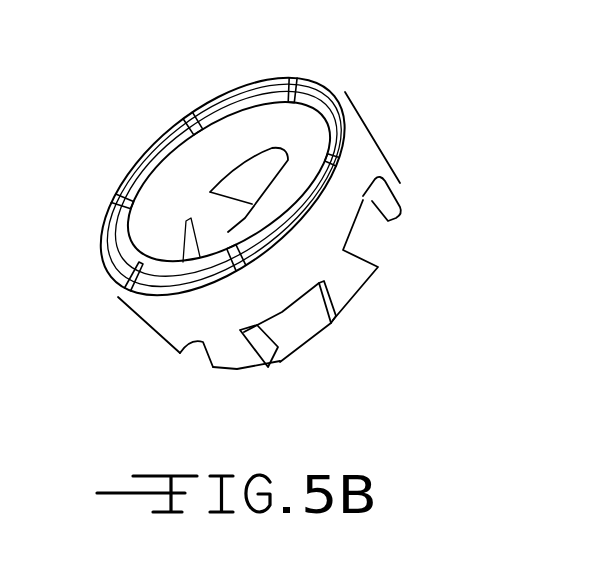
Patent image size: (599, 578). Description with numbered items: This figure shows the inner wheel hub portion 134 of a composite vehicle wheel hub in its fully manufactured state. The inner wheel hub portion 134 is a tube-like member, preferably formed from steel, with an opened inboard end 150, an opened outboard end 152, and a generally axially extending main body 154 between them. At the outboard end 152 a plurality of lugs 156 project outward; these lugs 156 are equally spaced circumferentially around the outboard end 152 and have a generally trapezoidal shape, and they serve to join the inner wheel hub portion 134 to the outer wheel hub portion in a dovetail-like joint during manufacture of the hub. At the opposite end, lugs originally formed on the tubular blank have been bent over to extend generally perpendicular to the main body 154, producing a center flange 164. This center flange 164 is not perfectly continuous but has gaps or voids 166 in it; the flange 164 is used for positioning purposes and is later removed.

The inner wheel hub portion 134 is at (400, 141).
The opened inboard end 150 is at (111, 240).
The opened outboard end 152 is at (367, 227).
The main body 154 is at (197, 342).
The lugs 156 is at (398, 184).
The center flange 164 is at (263, 219).
The gaps 166 is at (197, 123).